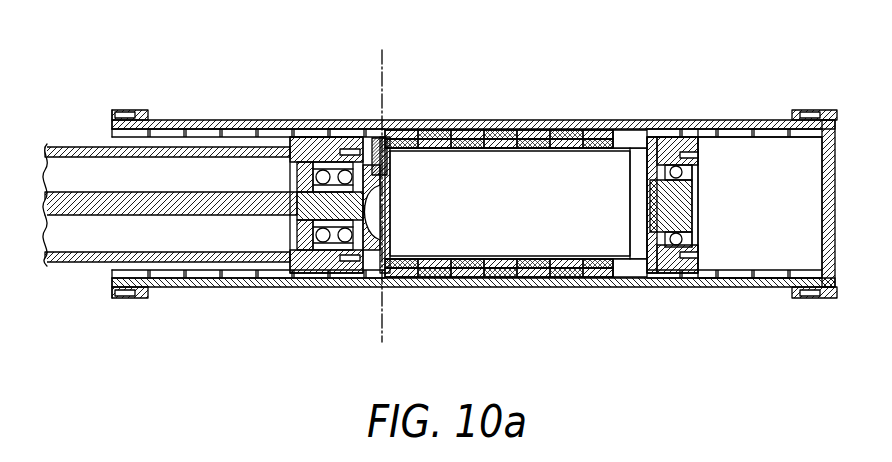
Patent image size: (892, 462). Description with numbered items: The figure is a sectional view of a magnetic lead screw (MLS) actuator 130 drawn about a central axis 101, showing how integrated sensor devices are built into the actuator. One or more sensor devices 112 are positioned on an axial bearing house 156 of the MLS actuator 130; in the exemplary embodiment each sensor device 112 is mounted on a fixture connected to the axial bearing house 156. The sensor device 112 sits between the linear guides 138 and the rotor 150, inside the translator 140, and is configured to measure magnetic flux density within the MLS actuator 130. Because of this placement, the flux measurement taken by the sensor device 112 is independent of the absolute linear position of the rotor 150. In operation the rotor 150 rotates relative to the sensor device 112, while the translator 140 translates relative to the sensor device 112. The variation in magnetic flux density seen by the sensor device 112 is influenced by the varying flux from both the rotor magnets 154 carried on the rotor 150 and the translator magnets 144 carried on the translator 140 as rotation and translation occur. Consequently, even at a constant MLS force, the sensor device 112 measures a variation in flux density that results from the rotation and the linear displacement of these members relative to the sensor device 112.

The MLS actuator 130 is at (177, 76).
The reference axis 101 is at (378, 62).
The sensor device 112 is at (372, 138).
The linear guides 138 is at (338, 140).
The translator magnets 144 is at (453, 117).
The rotor magnets 154 is at (556, 124).
The axial bearing house 156 is at (311, 274).
The rotor 150 is at (381, 200).
The translator 140 is at (524, 295).